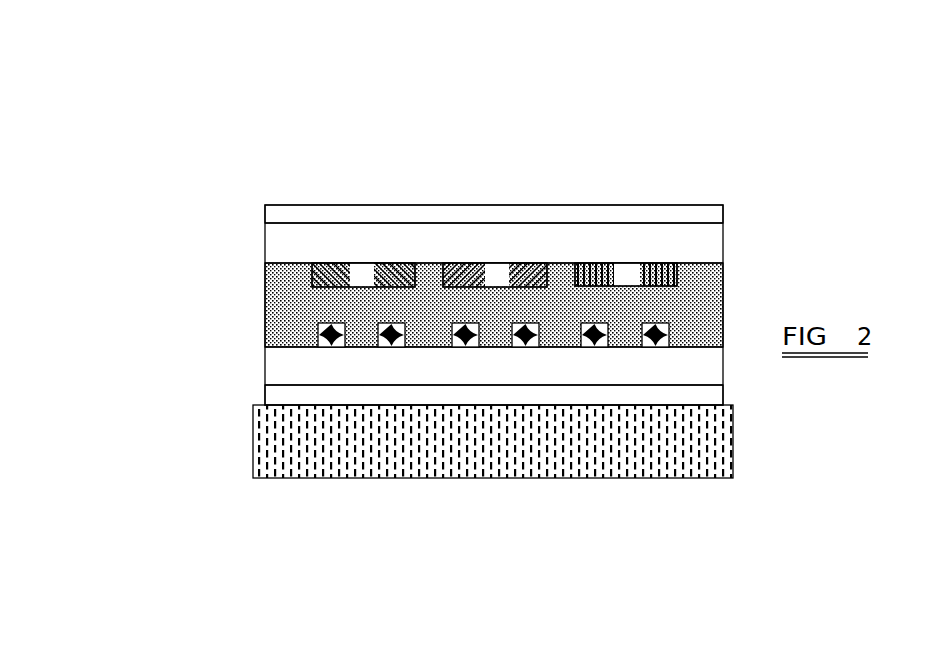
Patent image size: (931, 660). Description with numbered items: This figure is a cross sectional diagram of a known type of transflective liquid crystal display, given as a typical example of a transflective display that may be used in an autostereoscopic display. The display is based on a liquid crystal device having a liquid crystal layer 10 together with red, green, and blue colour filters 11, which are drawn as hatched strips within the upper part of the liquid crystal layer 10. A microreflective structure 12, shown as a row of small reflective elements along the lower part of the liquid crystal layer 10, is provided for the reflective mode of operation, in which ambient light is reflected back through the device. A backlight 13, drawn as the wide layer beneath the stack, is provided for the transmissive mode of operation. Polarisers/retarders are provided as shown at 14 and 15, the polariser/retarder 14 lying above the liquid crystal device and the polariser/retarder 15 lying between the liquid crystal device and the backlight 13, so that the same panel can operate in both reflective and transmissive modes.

The liquid crystal layer 10 is at (283, 313).
The colour filters 11 is at (572, 263).
The microreflective structure 12 is at (665, 325).
The backlight 13 is at (622, 438).
The polariser/retarder 14 is at (293, 205).
The polariser/retarder 15 is at (266, 395).